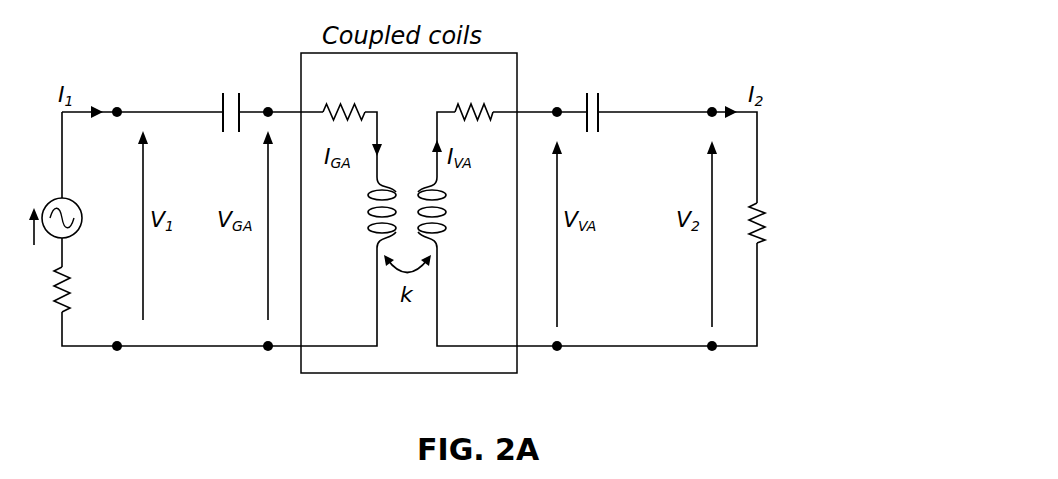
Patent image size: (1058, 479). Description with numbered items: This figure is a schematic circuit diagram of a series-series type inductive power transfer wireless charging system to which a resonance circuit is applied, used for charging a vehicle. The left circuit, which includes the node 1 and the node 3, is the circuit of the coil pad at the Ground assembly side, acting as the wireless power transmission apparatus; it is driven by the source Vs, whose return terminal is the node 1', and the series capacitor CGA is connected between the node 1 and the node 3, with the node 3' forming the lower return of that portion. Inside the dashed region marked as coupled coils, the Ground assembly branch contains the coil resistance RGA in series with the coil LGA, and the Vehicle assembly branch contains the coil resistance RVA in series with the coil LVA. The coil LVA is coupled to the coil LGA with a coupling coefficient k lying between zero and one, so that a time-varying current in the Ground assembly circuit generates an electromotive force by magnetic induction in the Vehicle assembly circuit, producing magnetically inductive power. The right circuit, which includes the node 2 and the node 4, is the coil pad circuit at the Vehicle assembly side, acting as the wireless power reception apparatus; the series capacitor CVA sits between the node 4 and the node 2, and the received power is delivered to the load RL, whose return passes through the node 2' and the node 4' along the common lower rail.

The node 1 is at (117, 97).
The node 2 is at (704, 97).
The node 3 is at (268, 97).
The node 4 is at (552, 97).
The node 1' (input return) 1' is at (120, 369).
The node 2' (output return) 2' is at (707, 369).
The node 3' is at (268, 369).
The node 4' is at (555, 369).
The source voltage Vs is at (68, 212).
The GA side capacitor CGA is at (218, 98).
The GA coil resistance RGA is at (341, 99).
The coil LGA is at (357, 212).
The coil LVA is at (449, 212).
The VA coil resistance RVA is at (472, 99).
The VA side capacitor CVA is at (600, 98).
The load resistance RL is at (774, 220).